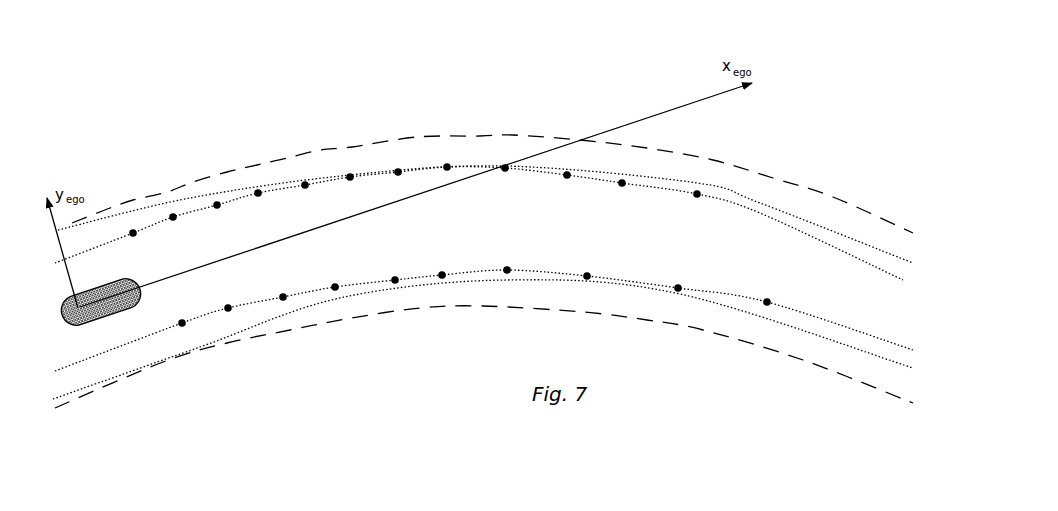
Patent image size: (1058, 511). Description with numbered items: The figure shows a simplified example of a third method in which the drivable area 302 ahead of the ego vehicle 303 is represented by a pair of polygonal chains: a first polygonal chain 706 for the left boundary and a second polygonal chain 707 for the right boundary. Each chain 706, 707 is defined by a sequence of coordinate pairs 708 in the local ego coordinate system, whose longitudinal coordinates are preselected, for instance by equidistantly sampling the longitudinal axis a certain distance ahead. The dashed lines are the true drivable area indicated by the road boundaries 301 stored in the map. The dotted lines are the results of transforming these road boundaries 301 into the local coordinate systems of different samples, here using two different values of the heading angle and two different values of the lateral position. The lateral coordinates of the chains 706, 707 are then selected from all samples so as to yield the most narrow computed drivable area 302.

The road boundaries 301 is at (233, 160).
The drivable area 302 is at (503, 288).
The ego vehicle 303 is at (103, 323).
The first polygonal chain 706 is at (504, 200).
The second polygonal chain 707 is at (483, 361).
The coordinate pairs 708 is at (447, 160).